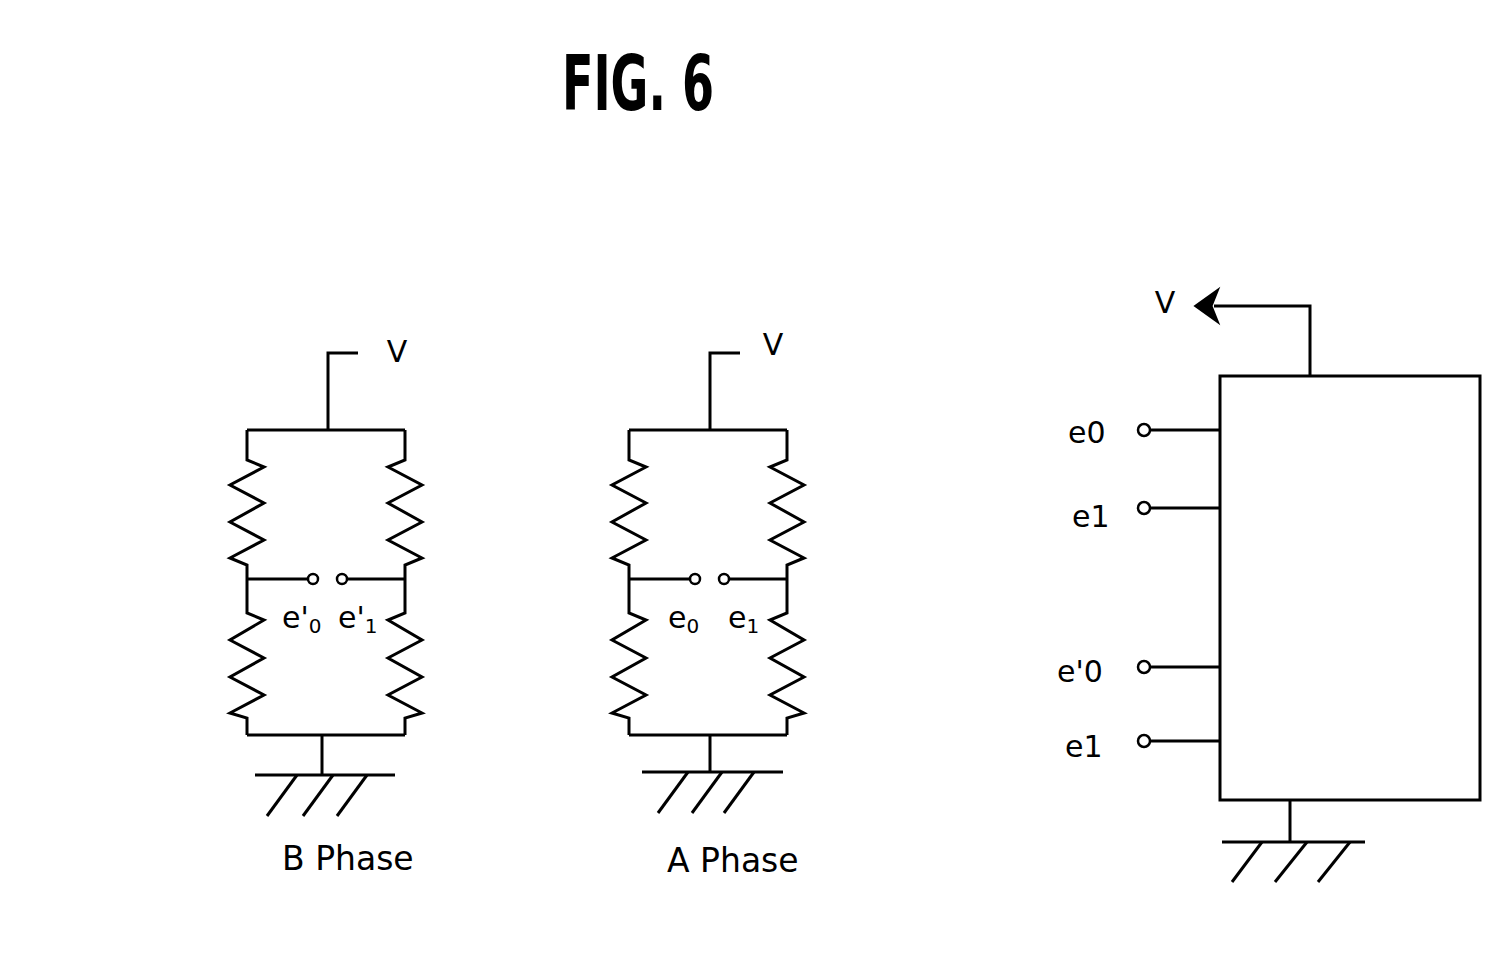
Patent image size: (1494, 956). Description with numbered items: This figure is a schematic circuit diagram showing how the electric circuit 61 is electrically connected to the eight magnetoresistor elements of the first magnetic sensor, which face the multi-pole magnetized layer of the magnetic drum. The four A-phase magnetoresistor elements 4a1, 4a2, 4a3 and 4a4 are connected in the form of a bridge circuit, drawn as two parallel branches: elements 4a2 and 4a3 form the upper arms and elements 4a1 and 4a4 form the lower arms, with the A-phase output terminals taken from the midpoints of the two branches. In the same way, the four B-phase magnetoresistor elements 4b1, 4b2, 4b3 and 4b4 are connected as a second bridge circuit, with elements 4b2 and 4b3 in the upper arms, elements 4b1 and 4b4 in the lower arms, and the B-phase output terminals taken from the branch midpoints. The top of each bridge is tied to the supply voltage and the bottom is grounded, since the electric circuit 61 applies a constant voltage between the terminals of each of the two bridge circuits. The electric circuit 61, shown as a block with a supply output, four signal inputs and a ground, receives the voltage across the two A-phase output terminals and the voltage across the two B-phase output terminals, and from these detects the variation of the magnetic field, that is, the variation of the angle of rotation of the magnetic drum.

The magnetoresistor element 4b1 is at (213, 657).
The magnetoresistor element 4b2 is at (213, 504).
The magnetoresistor element 4b3 is at (446, 504).
The magnetoresistor element 4b4 is at (446, 657).
The magnetoresistor element 4a1 is at (599, 657).
The magnetoresistor element 4a2 is at (593, 504).
The magnetoresistor element 4a3 is at (822, 504).
The magnetoresistor element 4a4 is at (825, 657).
The electric circuit 61 is at (1436, 376).